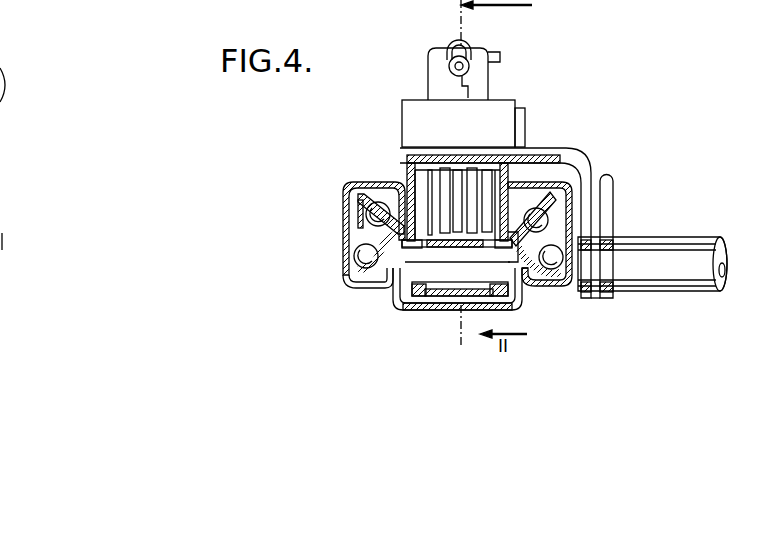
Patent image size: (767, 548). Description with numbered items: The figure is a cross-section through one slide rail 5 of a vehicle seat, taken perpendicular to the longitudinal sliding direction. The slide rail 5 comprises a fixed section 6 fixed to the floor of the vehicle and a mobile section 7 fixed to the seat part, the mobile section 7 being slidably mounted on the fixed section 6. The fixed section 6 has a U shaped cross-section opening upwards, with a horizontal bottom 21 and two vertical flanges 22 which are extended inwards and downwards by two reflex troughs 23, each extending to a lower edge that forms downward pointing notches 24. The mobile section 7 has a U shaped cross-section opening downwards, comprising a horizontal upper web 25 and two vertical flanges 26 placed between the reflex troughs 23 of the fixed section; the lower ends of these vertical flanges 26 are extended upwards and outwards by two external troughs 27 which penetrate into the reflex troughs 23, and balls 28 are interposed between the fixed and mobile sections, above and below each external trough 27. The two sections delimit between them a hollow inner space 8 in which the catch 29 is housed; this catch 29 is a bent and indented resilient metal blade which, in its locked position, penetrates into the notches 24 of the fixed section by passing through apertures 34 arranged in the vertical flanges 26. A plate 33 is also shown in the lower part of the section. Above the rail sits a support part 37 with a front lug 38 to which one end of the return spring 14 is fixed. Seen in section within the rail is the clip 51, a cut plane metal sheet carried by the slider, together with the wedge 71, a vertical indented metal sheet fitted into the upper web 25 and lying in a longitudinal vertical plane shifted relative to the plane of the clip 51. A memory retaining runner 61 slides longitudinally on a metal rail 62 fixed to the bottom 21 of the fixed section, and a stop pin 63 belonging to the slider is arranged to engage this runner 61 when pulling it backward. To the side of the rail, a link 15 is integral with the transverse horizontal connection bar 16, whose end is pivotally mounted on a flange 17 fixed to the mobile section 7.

The slide rail 5 is at (388, 145).
The fixed section 6 is at (336, 279).
The mobile section 7 is at (405, 166).
The hollow inner space 8 is at (505, 160).
The return spring 14 is at (473, 38).
The link 15 is at (612, 192).
The transverse horizontal connection bar 16 is at (680, 257).
The flange 17 is at (593, 293).
The horizontal bottom 21 is at (421, 315).
The vertical flange 22 is at (345, 213).
The reflex trough 23 is at (580, 155).
The notch 24 is at (362, 275).
The horizontal upper web 25 is at (400, 155).
The vertical flange 26 is at (525, 150).
The external trough 27 is at (357, 243).
The ball 28 is at (373, 218).
The catch 29 is at (457, 258).
The plate 33 is at (388, 262).
The aperture 34 is at (402, 300).
The support part 37 is at (420, 118).
The front lug 38 is at (438, 63).
The clip 51 is at (445, 205).
The memory retaining runner 61 is at (517, 290).
The metal rail 62 is at (448, 312).
The stop pin 63 is at (437, 196).
The wedge 71 is at (470, 185).